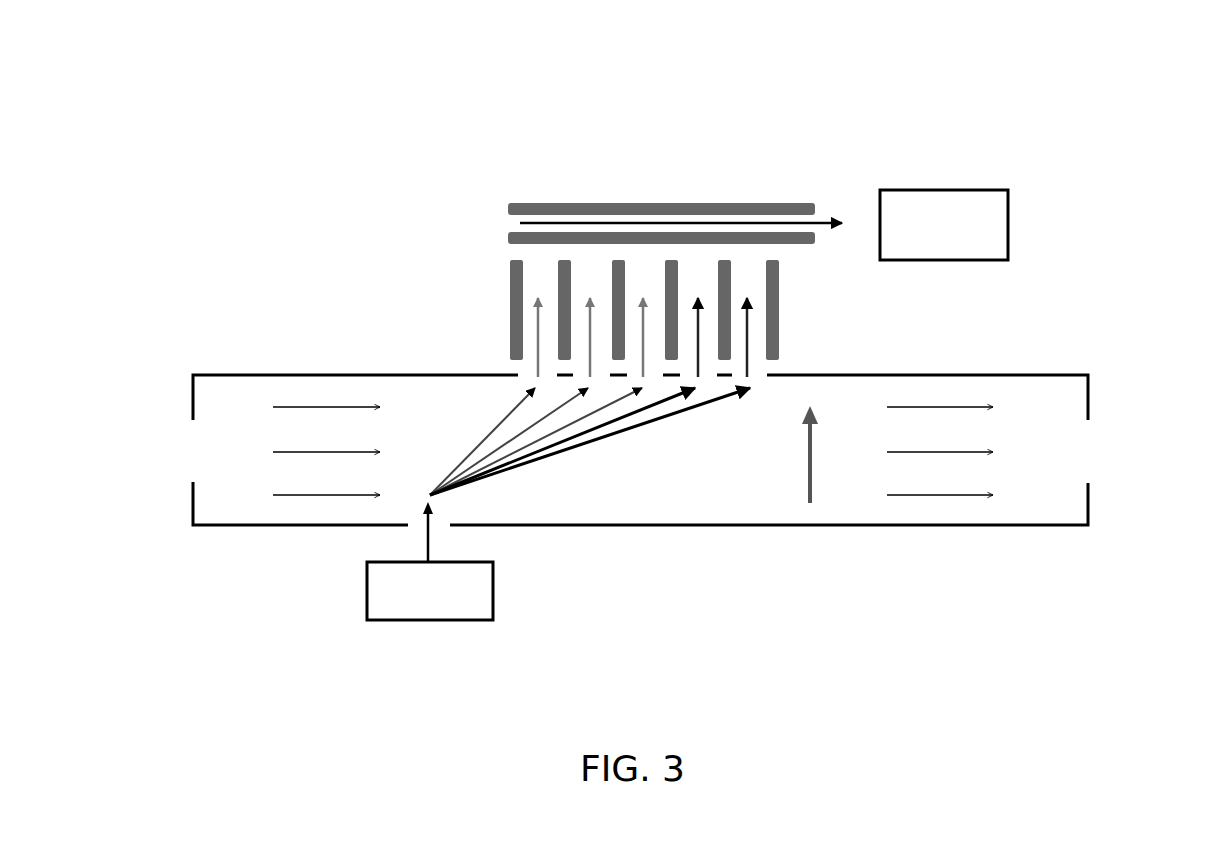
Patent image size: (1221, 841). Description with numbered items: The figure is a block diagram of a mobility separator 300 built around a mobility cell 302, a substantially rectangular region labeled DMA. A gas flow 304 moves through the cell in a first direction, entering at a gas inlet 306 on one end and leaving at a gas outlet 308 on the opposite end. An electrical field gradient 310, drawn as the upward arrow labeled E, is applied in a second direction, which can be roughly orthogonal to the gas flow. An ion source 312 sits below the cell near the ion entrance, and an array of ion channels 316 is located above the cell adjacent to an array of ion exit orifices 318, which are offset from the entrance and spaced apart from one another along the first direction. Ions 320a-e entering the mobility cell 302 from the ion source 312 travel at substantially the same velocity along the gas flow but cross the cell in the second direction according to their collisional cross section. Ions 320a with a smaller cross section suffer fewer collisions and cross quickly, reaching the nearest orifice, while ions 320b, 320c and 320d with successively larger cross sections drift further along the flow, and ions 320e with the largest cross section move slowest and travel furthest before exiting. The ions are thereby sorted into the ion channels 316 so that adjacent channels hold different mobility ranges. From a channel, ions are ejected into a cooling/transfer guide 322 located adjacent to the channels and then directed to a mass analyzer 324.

The mobility separator 300 is at (1052, 110).
The mobility cell 302 is at (653, 525).
The gas flow 304 is at (287, 495).
The gas inlet 306 is at (193, 437).
The gas outlet 308 is at (1088, 481).
The electrical field gradient 310 is at (813, 483).
The ion source 312 is at (495, 593).
The array of ion channels 316 is at (781, 334).
The array of ion exit orifices 318 is at (765, 375).
The ions 320a-e is at (423, 533).
The ions with smaller collisional cross section 320a is at (520, 403).
The ions 320b is at (537, 422).
The ions 320c is at (515, 449).
The ions 320d is at (647, 413).
The ions with larger collisional cross section 320e is at (690, 412).
The cooling/transfer guide 322 is at (683, 203).
The mass analyzer 324 is at (967, 260).